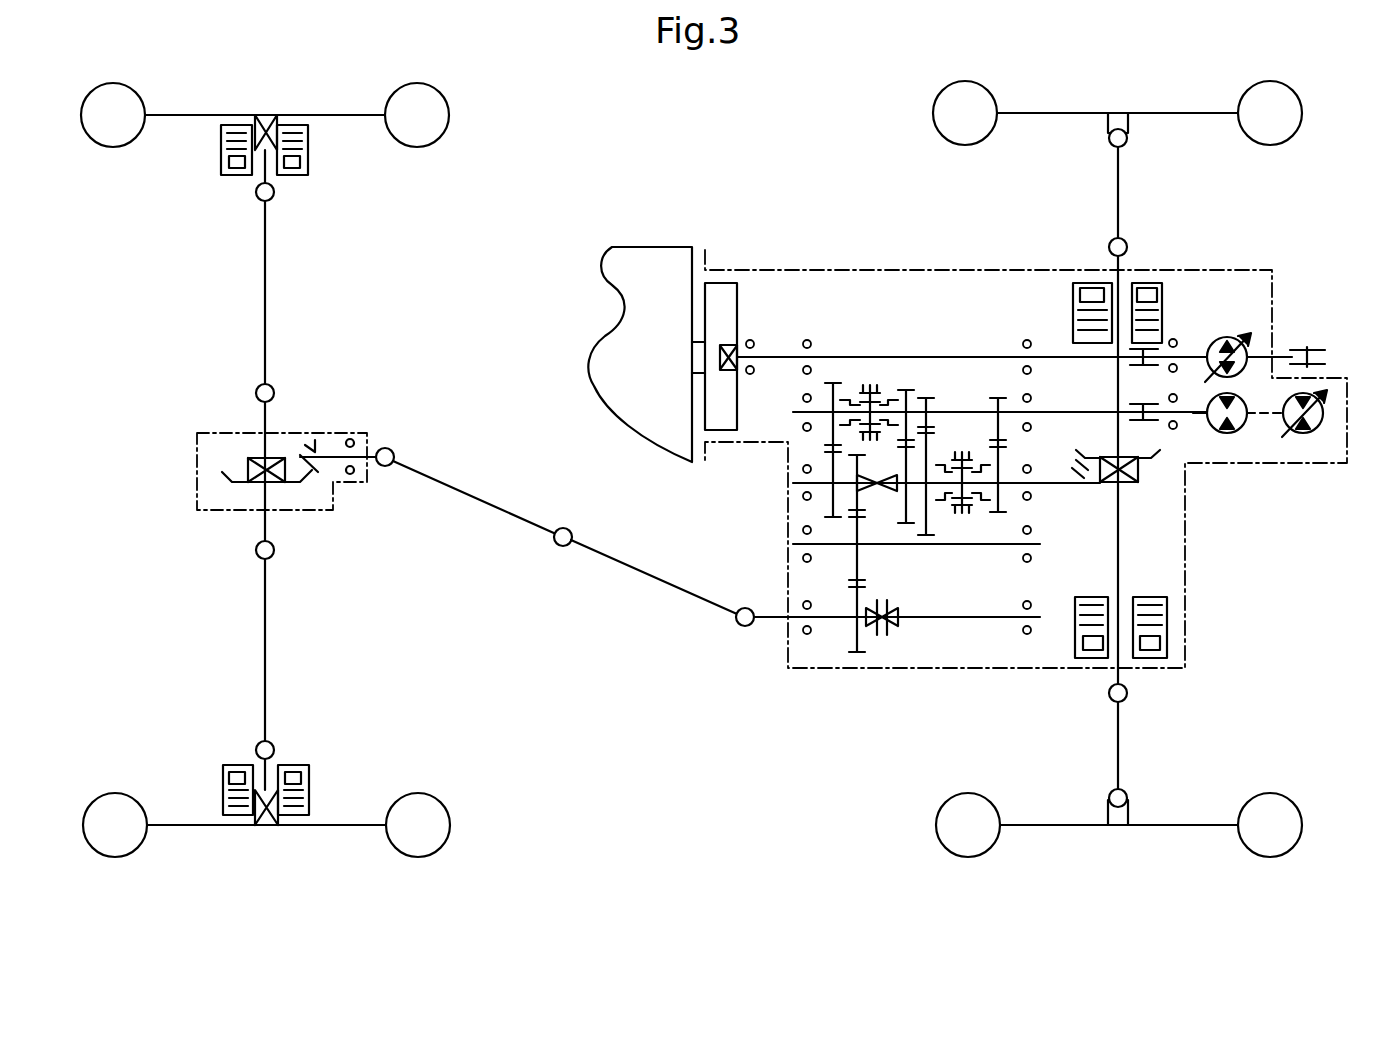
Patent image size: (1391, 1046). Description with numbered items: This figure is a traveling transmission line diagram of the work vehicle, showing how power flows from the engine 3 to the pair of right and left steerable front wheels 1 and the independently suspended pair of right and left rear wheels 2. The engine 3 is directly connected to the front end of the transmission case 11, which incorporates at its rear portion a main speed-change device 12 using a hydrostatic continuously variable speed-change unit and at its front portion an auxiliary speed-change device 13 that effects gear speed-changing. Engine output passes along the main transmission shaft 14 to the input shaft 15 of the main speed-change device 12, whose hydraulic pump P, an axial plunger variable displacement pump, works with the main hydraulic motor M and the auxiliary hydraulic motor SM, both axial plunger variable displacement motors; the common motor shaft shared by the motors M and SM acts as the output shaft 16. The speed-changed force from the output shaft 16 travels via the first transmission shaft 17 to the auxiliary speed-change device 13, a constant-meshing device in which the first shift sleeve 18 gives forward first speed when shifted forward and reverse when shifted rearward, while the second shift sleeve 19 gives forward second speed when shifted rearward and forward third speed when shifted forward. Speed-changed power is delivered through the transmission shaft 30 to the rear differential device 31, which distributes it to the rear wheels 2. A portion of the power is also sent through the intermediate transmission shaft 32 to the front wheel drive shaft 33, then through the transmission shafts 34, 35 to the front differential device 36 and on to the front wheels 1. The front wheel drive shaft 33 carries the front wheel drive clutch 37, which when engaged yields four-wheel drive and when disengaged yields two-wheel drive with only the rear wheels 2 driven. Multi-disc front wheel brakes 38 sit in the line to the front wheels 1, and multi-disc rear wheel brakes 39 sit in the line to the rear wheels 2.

The front wheels 1 is at (443, 118).
The rear wheels 2 is at (940, 118).
The engine 3 is at (647, 268).
The transmission case 11 is at (985, 262).
The main speed-change device 12 is at (1287, 361).
The auxiliary speed-change device 13 is at (897, 352).
The main transmission shaft 14 is at (953, 356).
The input shaft 15 is at (1192, 350).
The output shaft 16 is at (1187, 416).
The first transmission shaft 17 is at (1047, 407).
The first shift sleeve 18 is at (962, 448).
The second shift sleeve 19 is at (866, 388).
The transmission shaft 30 is at (1058, 493).
The rear differential device 31 is at (1150, 500).
The intermediate transmission shaft 32 is at (947, 547).
The front wheel drive shaft 33 is at (839, 620).
The transmission shaft 34 is at (644, 574).
The transmission shaft 35 is at (468, 495).
The front differential device 36 is at (318, 498).
The front wheel drive clutch 37 is at (900, 648).
The front wheel brakes 38 is at (318, 160).
The rear wheel brakes 39 is at (1069, 292).
The hydraulic pump P is at (1242, 344).
The main hydraulic motor M is at (1240, 432).
The auxiliary hydraulic motor SM is at (1318, 432).